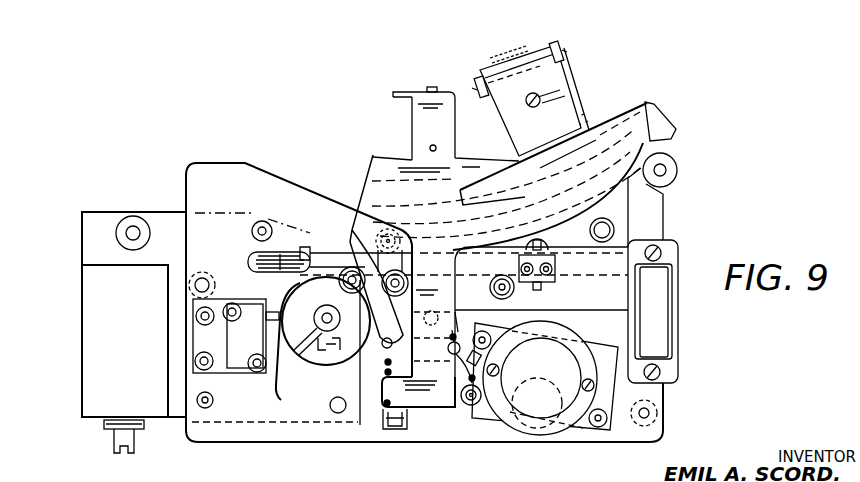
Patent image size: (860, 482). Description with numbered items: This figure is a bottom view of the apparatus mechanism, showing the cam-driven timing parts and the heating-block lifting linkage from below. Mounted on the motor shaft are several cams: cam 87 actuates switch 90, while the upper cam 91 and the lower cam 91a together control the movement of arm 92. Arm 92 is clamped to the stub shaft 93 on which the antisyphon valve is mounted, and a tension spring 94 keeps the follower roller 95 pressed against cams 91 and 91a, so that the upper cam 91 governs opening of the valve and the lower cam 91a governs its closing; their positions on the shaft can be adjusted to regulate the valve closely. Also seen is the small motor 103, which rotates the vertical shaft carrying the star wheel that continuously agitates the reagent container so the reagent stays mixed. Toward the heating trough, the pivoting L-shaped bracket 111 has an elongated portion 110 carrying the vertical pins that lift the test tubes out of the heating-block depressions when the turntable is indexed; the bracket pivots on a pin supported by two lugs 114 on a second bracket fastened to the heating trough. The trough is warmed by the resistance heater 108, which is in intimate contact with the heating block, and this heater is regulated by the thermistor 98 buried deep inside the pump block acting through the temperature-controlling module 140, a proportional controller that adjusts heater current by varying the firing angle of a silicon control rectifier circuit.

The temperature-controlling module SCR 140 is at (100, 404).
The resistance heater 108 is at (310, 250).
The follower roller 95 is at (350, 266).
The upper cam 91 is at (291, 293).
The switch 90 is at (240, 365).
The cam 87 is at (313, 363).
The lower cam 91a is at (302, 370).
The arm 92 is at (366, 355).
The tension spring 94 is at (384, 380).
The stub shaft 93 is at (451, 356).
The thermistor 98 is at (478, 404).
The motor 103 is at (567, 428).
The lugs 114 is at (476, 87).
The L-shaped bracket 111 is at (553, 82).
The elongated portion 110 is at (655, 112).